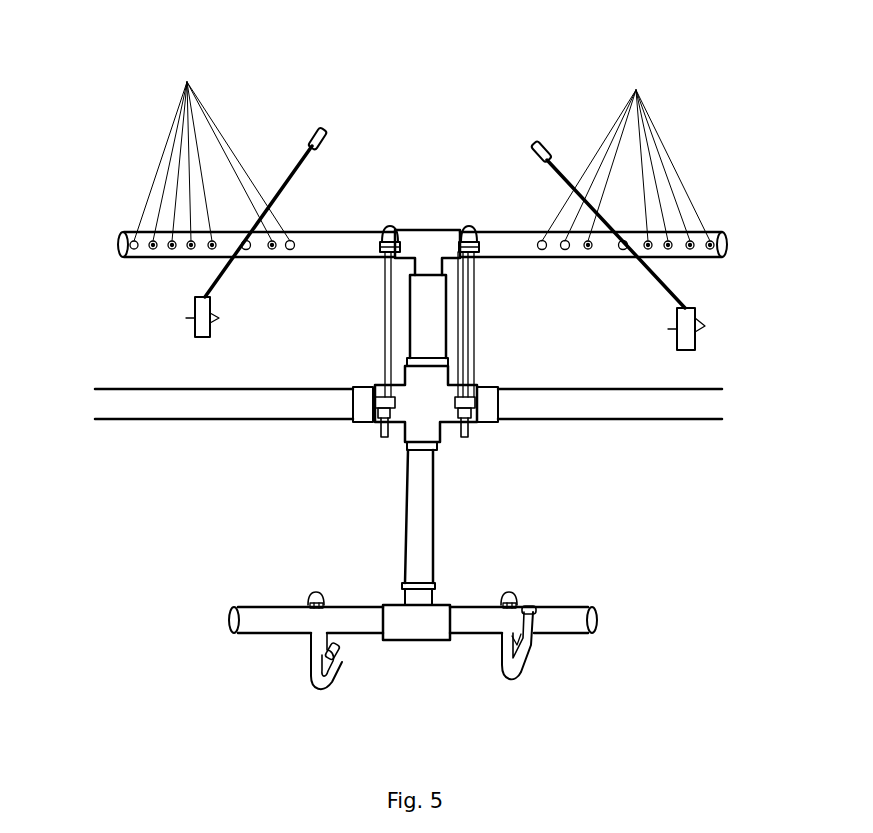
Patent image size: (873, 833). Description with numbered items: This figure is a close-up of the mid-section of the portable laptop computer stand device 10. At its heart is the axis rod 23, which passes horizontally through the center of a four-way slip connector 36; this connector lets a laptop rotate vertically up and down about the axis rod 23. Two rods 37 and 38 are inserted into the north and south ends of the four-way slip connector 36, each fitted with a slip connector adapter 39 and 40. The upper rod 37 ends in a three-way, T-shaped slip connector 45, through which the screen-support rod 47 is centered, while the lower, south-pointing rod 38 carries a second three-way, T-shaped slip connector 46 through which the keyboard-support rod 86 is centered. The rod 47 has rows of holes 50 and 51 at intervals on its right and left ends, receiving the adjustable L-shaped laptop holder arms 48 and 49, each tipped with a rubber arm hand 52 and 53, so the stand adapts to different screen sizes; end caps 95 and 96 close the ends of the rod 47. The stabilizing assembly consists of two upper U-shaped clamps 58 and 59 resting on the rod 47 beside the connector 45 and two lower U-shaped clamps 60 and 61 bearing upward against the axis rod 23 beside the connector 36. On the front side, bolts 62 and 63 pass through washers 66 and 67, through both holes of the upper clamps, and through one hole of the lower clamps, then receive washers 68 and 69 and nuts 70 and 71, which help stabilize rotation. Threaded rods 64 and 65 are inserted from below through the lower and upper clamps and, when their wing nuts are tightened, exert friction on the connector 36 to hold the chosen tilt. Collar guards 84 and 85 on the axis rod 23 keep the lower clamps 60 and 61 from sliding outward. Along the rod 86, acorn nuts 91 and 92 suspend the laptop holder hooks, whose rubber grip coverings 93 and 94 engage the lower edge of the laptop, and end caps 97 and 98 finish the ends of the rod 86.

The portable laptop computer stand device 10 is at (432, 125).
The axis rod 23 is at (162, 410).
The four-way slip connector 36 is at (415, 410).
The rod 37 is at (428, 312).
The second rod 38 is at (425, 515).
The slip connector adapter 39 is at (470, 362).
The slip connector adapter 40 is at (442, 442).
The three-way, T-shaped slip connector 45 is at (433, 228).
The three-way, T-shaped slip connector 46 is at (418, 620).
The rod 47 is at (314, 240).
The L-shaped laptop holder arm 48 is at (690, 280).
The L-shaped laptop holder arm 49 is at (212, 277).
The holes 50 is at (626, 154).
The holes 51 is at (212, 151).
The rubber arm hand 52 is at (200, 332).
The rubber arm hand 53 is at (690, 335).
The U-shaped clamp 58 is at (474, 228).
The U-shaped clamp 59 is at (386, 232).
The lower U-shaped clamp 60 is at (370, 428).
The lower U-shaped clamp 61 is at (472, 425).
The bolt 62 is at (396, 318).
The bolt 63 is at (480, 290).
The threaded rod 64 is at (378, 300).
The threaded rod 65 is at (480, 312).
The washer 66 is at (378, 250).
The washer 67 is at (484, 250).
The washer 68 is at (355, 393).
The washer 69 is at (483, 400).
The nut 70 is at (352, 424).
The nut 71 is at (490, 422).
The collar guard 84 is at (350, 408).
The collar guard 85 is at (497, 408).
The rod 86 is at (285, 627).
The acorn nut 91 is at (520, 598).
The acorn nut 92 is at (306, 596).
The rubber grip covering 93 is at (312, 686).
The rubber grip covering 94 is at (518, 677).
The end cap 95 is at (121, 241).
The end cap 96 is at (724, 237).
The end cap 97 is at (233, 618).
The end cap 98 is at (600, 618).